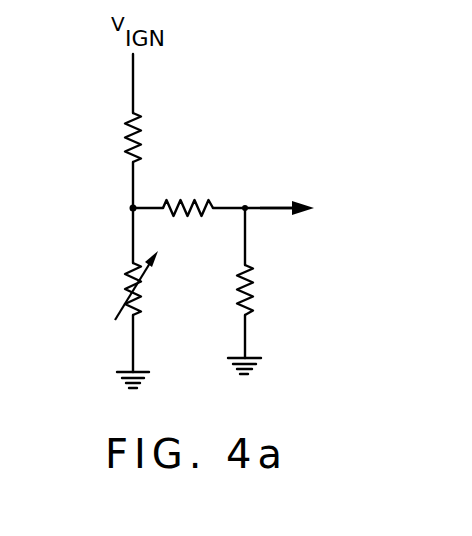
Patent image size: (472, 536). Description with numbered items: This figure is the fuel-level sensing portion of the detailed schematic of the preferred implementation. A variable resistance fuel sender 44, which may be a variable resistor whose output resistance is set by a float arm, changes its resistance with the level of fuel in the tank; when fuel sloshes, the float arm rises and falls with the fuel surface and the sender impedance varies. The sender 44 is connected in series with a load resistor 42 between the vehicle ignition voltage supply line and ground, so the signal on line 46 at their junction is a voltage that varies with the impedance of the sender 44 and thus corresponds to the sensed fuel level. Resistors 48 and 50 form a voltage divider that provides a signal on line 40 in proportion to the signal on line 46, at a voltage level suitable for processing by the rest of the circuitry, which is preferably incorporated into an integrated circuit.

The line 40 is at (269, 207).
The load resistor 42 is at (130, 118).
The variable resistance fuel sender 44 is at (130, 285).
The line 46 is at (131, 207).
The resistor 48 is at (188, 198).
The resistor 50 is at (250, 282).